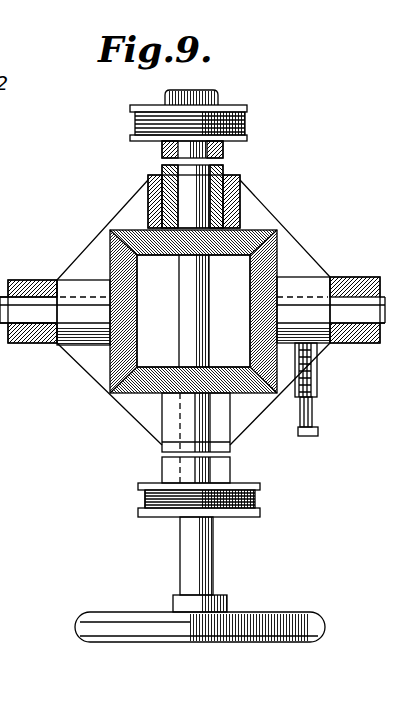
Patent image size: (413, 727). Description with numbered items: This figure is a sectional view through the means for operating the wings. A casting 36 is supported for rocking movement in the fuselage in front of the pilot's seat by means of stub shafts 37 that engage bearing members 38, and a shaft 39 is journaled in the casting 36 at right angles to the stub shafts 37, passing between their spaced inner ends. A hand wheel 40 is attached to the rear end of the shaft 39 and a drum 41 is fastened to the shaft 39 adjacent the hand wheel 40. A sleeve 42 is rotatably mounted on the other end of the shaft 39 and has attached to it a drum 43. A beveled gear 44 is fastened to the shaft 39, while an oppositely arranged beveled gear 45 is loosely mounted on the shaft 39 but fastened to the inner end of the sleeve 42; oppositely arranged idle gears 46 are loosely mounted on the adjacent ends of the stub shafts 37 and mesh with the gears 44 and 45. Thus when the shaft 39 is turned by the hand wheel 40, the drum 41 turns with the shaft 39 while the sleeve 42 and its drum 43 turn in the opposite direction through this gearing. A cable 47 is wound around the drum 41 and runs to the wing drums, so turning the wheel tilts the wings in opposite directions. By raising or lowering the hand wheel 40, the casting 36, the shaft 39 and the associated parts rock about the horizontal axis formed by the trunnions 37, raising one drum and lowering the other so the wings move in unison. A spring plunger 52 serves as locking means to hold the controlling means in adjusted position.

The casting 36 is at (285, 258).
The stub shaft 37 is at (25, 308).
The bearing member 38 is at (68, 347).
The shaft 39 is at (188, 307).
The hand wheel 40 is at (180, 642).
The drum 41 is at (257, 507).
The sleeve 42 is at (237, 177).
The drum 43 is at (247, 134).
The beveled gear 44 is at (238, 355).
The beveled gear 45 is at (240, 256).
The idle gear 46 is at (137, 316).
The cable 47 is at (160, 492).
The spring plunger 52 is at (310, 389).